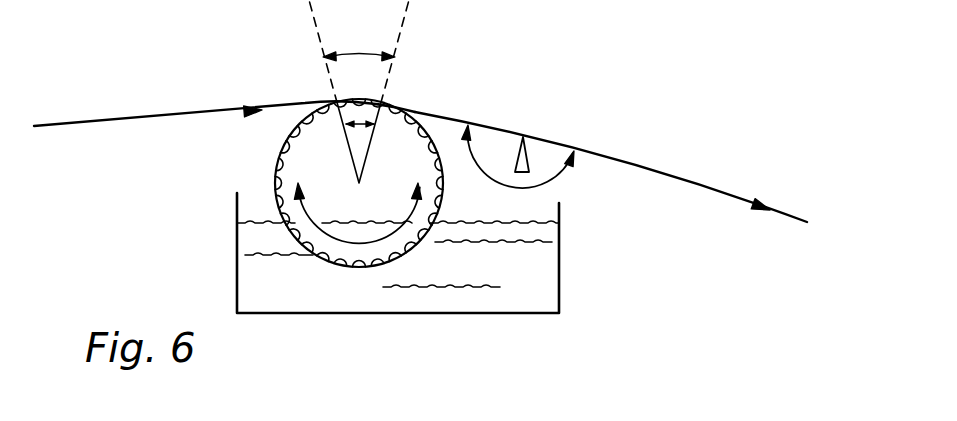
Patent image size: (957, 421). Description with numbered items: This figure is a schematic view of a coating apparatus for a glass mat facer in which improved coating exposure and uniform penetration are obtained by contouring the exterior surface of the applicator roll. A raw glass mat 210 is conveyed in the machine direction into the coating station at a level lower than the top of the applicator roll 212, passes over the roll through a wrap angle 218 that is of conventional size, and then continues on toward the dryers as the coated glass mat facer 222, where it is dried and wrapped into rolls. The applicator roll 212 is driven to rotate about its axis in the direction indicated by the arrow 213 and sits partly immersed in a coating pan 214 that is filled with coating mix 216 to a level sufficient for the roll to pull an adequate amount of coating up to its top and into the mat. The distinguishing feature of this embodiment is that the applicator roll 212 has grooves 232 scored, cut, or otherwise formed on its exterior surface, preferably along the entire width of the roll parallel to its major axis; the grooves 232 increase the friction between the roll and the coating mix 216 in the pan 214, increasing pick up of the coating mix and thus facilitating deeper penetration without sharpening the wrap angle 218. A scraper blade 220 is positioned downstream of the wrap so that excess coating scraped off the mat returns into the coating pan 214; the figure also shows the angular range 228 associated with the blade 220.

The glass mat 210 is at (135, 120).
The applicator roll 212 is at (260, 158).
The arrow 213 is at (377, 240).
The coating pan 214 is at (498, 313).
The coating mix 216 is at (527, 263).
The wrap angle 218 is at (368, 56).
The scraper blade 220 is at (530, 157).
The coated glass mat facer 222 is at (645, 166).
The blade swing angle 228 is at (523, 188).
The grooves 232 is at (427, 129).